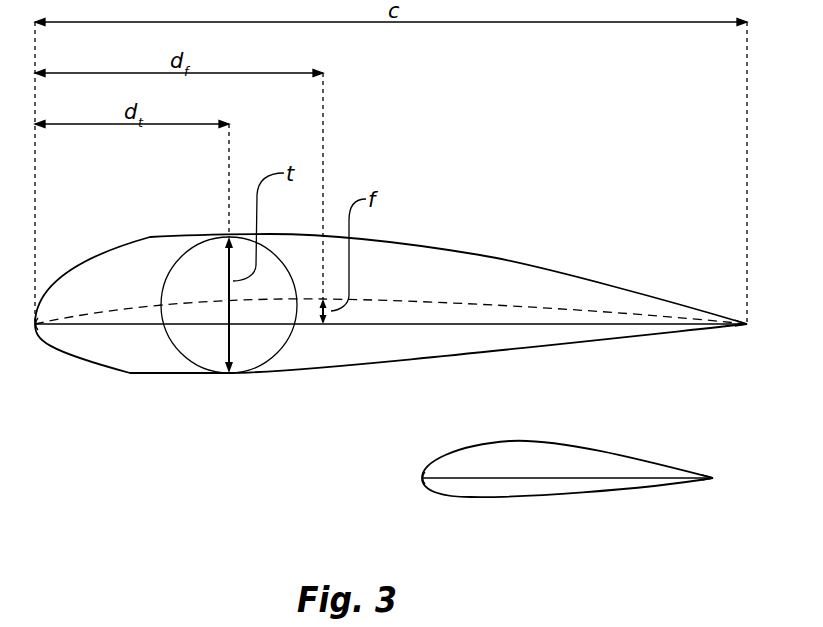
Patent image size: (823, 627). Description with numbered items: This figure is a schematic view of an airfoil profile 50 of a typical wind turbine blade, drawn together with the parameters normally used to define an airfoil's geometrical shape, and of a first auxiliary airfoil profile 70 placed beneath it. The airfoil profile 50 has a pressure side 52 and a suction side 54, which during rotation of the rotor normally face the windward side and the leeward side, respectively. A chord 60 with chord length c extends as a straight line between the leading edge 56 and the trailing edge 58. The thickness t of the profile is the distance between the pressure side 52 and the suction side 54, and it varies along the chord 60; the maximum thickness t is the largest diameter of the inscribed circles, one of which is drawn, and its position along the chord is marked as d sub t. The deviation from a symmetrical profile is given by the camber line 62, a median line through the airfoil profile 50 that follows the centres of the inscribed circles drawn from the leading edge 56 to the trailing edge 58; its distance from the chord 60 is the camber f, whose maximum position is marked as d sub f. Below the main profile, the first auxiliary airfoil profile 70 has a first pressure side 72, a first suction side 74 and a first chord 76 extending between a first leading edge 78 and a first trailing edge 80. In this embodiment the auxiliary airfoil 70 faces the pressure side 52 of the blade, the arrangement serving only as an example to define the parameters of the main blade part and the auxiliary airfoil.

The airfoil profile 50 is at (658, 107).
The pressure side 52 is at (530, 348).
The suction side 54 is at (479, 256).
The leading edge 56 is at (35, 324).
The trailing edge 58 is at (747, 322).
The chord 60 is at (562, 313).
The camber line 62 is at (378, 300).
The first auxiliary airfoil profile 70 is at (700, 386).
The first pressure side 72 is at (570, 495).
The first suction side 74 is at (462, 446).
The first chord 76 is at (502, 480).
The first leading edge 78 is at (420, 477).
The first trailing edge 80 is at (713, 477).